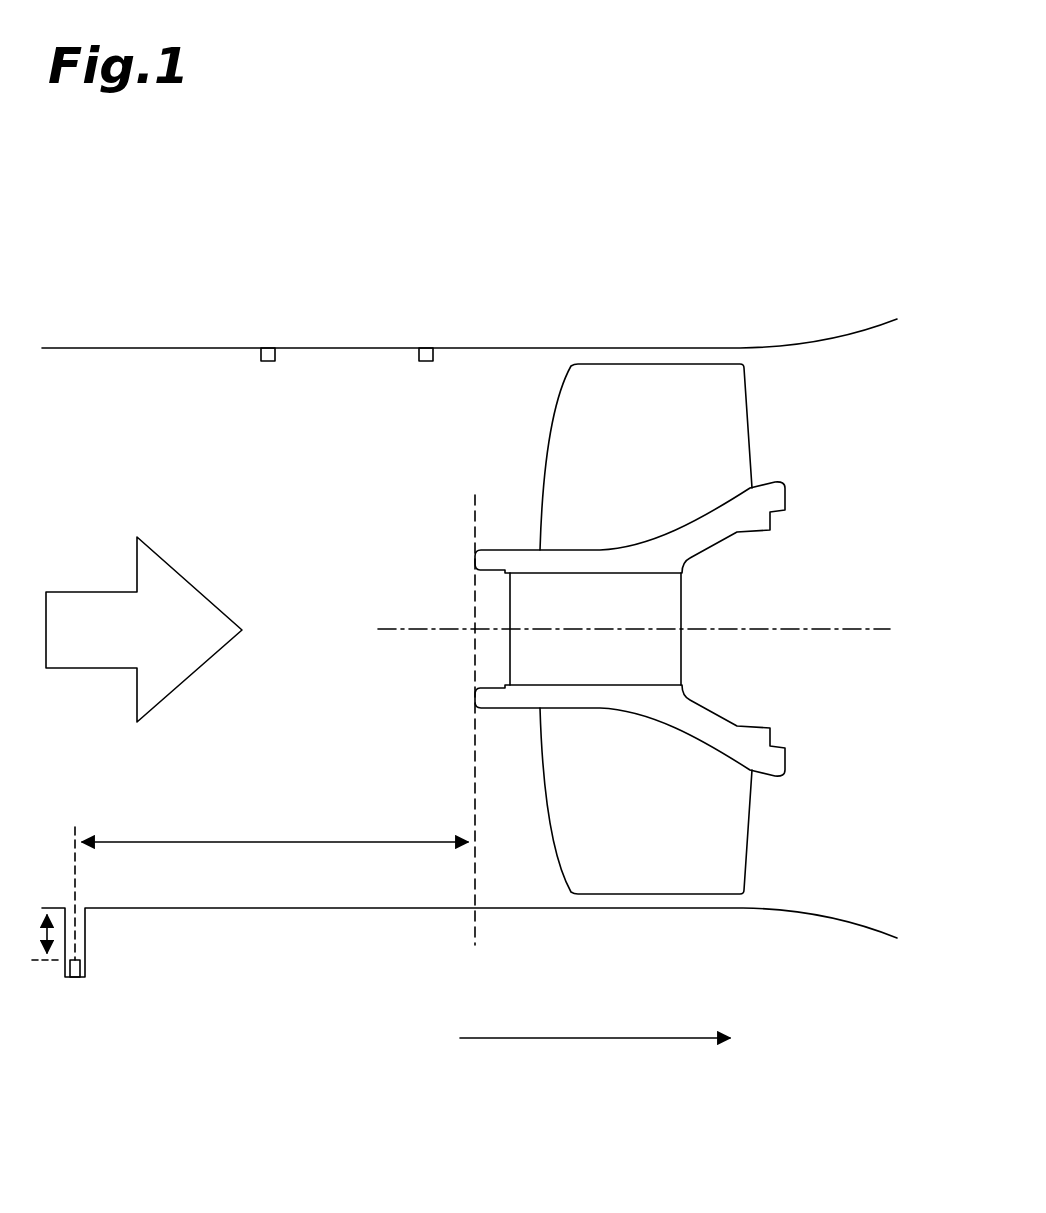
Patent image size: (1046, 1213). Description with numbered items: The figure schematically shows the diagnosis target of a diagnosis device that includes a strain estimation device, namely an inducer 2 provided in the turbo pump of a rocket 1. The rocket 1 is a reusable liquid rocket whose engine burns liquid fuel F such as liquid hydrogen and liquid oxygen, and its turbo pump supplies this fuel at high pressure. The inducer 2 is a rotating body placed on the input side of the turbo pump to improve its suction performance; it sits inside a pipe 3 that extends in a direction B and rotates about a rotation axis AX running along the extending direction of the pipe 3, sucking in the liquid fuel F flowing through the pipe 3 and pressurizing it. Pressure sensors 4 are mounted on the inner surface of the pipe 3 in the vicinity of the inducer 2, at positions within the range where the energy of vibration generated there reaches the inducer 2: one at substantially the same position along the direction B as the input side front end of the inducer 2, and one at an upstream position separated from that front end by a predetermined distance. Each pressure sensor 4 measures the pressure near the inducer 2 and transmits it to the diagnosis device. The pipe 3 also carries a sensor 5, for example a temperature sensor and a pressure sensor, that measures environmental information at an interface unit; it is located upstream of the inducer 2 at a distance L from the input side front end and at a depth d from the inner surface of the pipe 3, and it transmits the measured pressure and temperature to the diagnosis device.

The rocket 1 is at (840, 278).
The inducer 2 is at (797, 438).
The pipe 3 is at (317, 907).
The pressure sensor 4 is at (268, 363).
The sensor 5 is at (81, 965).
The rotation axis AX is at (862, 627).
The liquid fuel F is at (80, 591).
The direction B is at (610, 1037).
The distance L is at (275, 727).
The depth d is at (39, 937).